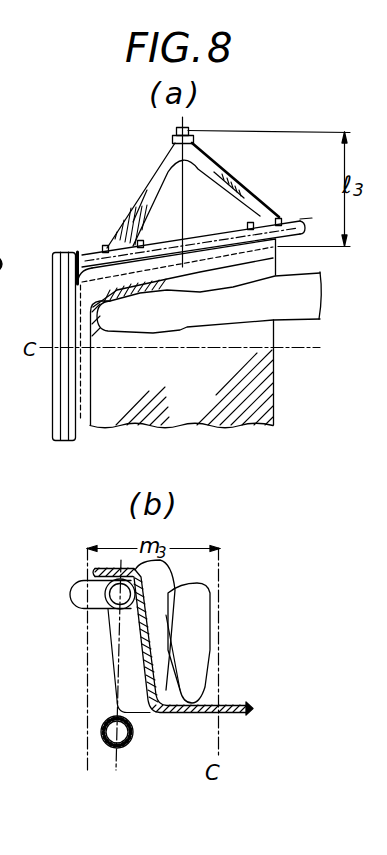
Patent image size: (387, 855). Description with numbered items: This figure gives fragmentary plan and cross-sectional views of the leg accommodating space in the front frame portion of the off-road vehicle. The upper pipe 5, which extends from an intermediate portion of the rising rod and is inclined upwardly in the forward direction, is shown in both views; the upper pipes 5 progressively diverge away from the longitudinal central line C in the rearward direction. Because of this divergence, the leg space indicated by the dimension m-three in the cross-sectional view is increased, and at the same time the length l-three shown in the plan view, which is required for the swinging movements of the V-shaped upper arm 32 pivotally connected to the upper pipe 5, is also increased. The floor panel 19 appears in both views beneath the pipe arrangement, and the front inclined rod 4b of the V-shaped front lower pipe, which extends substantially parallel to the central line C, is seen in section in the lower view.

The V-shaped upper arm 32 is at (146, 192).
The upper pipe 5 is at (204, 235).
The floor panel 19 is at (157, 408).
The front inclined rod 4b is at (108, 749).